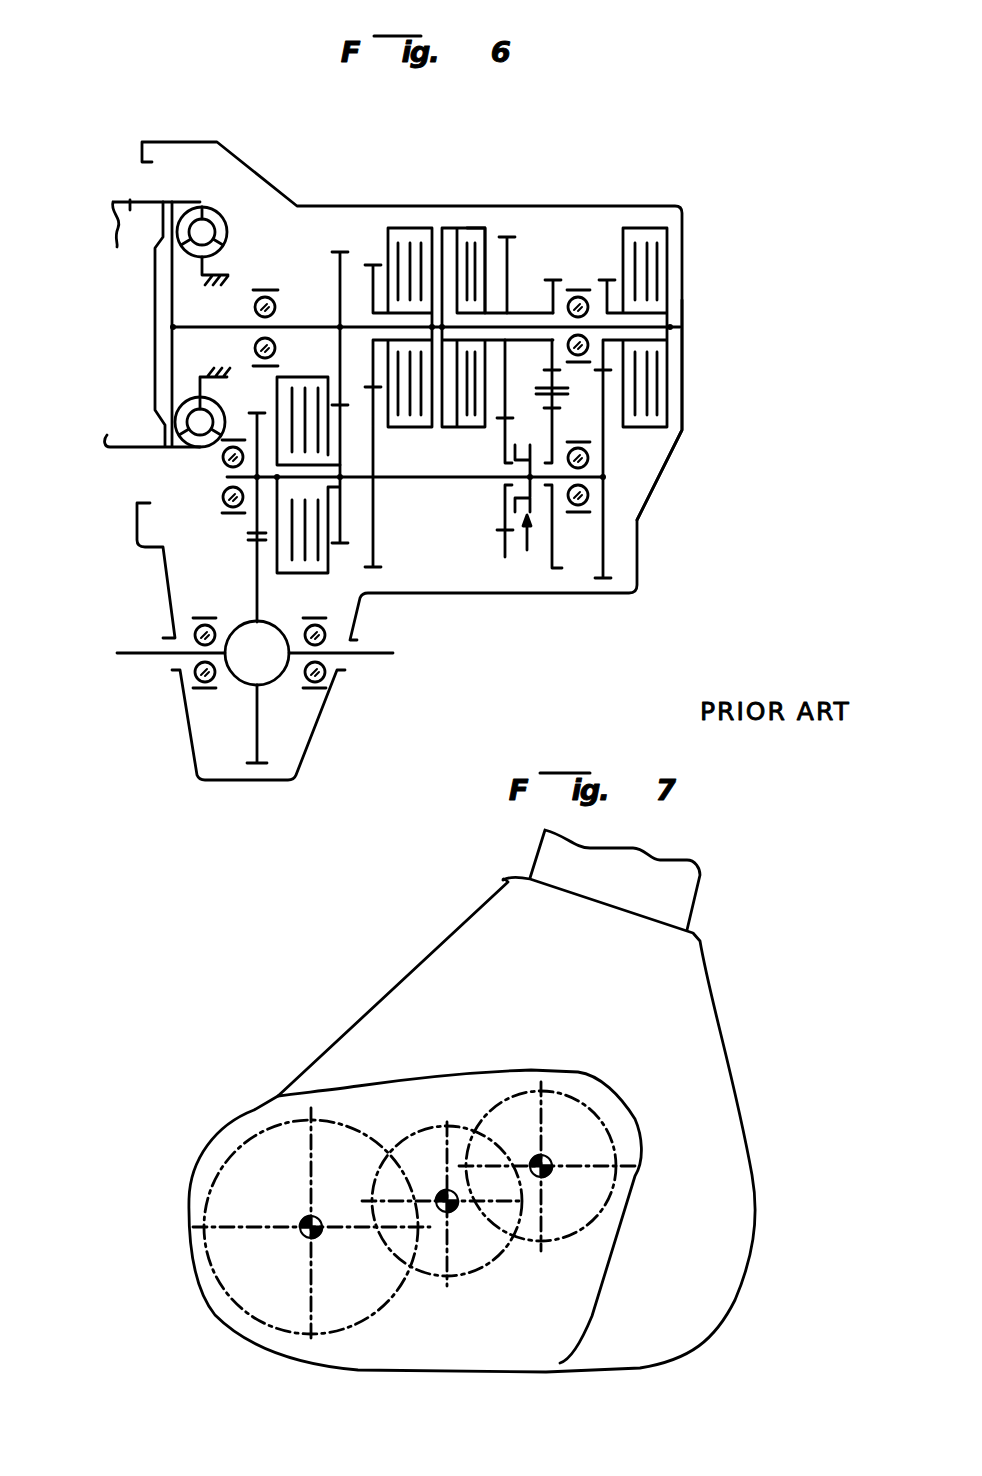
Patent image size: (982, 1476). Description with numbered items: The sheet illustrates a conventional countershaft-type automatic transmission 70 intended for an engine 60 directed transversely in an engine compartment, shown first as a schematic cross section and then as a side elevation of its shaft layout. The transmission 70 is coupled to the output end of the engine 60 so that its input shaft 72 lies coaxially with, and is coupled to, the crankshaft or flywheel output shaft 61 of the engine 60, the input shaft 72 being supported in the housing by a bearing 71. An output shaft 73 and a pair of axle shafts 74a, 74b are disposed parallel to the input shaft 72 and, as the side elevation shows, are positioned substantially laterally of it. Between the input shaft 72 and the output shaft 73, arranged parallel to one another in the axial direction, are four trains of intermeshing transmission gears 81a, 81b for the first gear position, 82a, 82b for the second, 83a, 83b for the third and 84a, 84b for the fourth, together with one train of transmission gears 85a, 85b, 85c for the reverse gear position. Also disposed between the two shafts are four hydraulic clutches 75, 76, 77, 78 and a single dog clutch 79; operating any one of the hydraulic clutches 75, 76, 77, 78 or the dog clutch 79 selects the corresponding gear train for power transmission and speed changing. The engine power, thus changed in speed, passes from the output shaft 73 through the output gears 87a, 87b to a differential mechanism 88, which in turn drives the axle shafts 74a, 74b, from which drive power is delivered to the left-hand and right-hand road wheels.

In FIG. 7, the engine 60 is at (689, 992).
In FIG. 6, the output shaft (flywheel) of the engine 61 is at (130, 208).
In FIG. 6, the transmission 70 is at (617, 172).
In FIG. 7, the transmission 70 is at (365, 1068).
In FIG. 6, the bearing 71 is at (225, 203).
In FIG. 6, the input shaft 72 is at (307, 323).
In FIG. 7, the input shaft 72 is at (543, 1176).
In FIG. 6, the output shaft 73 is at (435, 478).
In FIG. 7, the output shaft 73 is at (452, 1213).
In FIG. 6, the axle shaft 74a is at (127, 660).
In FIG. 6, the axle shaft 74b is at (372, 660).
In FIG. 7, the axle shaft 74b is at (306, 1232).
In FIG. 6, the hydraulic clutch 75 is at (657, 428).
In FIG. 6, the hydraulic clutch 76 is at (418, 228).
In FIG. 6, the hydraulic clutch 77 is at (275, 392).
In FIG. 6, the hydraulic clutch 78 is at (467, 228).
In FIG. 6, the dog clutch 79 is at (527, 514).
In FIG. 6, the transmission gear 81a is at (607, 280).
In FIG. 6, the transmission gear 81b is at (607, 583).
In FIG. 6, the transmission gear 82a is at (372, 262).
In FIG. 6, the transmission gear 82b is at (375, 569).
In FIG. 6, the transmission gear 83a is at (338, 250).
In FIG. 6, the transmission gear 83b is at (342, 546).
In FIG. 6, the transmission gear 84a is at (507, 233).
In FIG. 6, the transmission gear 84b is at (505, 557).
In FIG. 6, the transmission gear 85a is at (553, 280).
In FIG. 6, the transmission gear 85b is at (572, 405).
In FIG. 6, the transmission gear 85c is at (558, 570).
In FIG. 6, the output gear 87a is at (248, 415).
In FIG. 6, the output gear 87b is at (267, 766).
In FIG. 6, the differential mechanism 88 is at (246, 637).